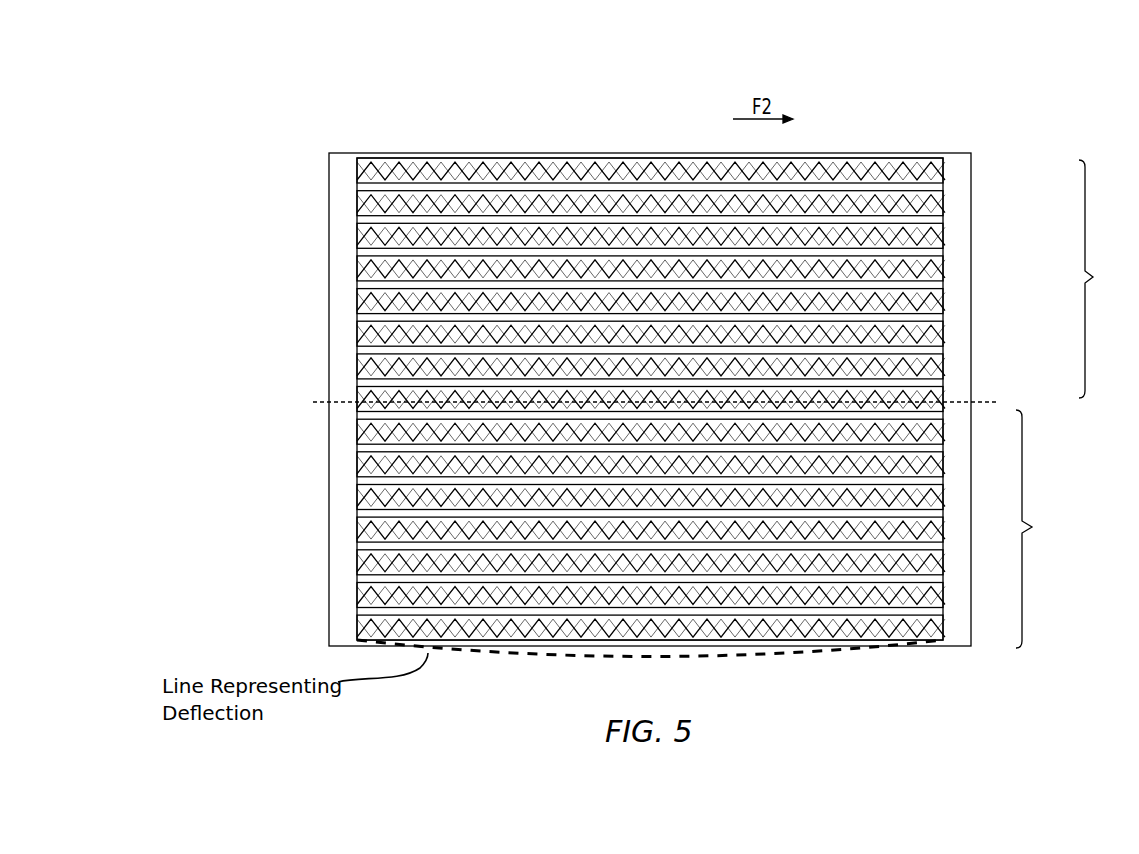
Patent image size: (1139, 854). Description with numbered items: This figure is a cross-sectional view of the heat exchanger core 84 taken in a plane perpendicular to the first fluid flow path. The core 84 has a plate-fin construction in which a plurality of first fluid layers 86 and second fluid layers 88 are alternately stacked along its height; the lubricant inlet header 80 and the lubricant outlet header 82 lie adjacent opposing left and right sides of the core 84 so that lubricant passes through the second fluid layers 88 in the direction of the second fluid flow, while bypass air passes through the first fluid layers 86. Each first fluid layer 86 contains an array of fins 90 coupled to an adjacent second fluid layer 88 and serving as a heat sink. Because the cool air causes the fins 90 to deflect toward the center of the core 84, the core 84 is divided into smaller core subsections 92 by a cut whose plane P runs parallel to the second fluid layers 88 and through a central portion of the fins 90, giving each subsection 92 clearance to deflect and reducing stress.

The lubricant inlet header 80 is at (338, 275).
The lubricant outlet header 82 is at (960, 290).
The core 84 is at (1025, 116).
The first fluid layers 86 is at (357, 532).
The second fluid layers 88 is at (893, 610).
The fins 90 is at (623, 233).
The core subsections 92 is at (1066, 404).
The plane of the cut P is at (978, 400).